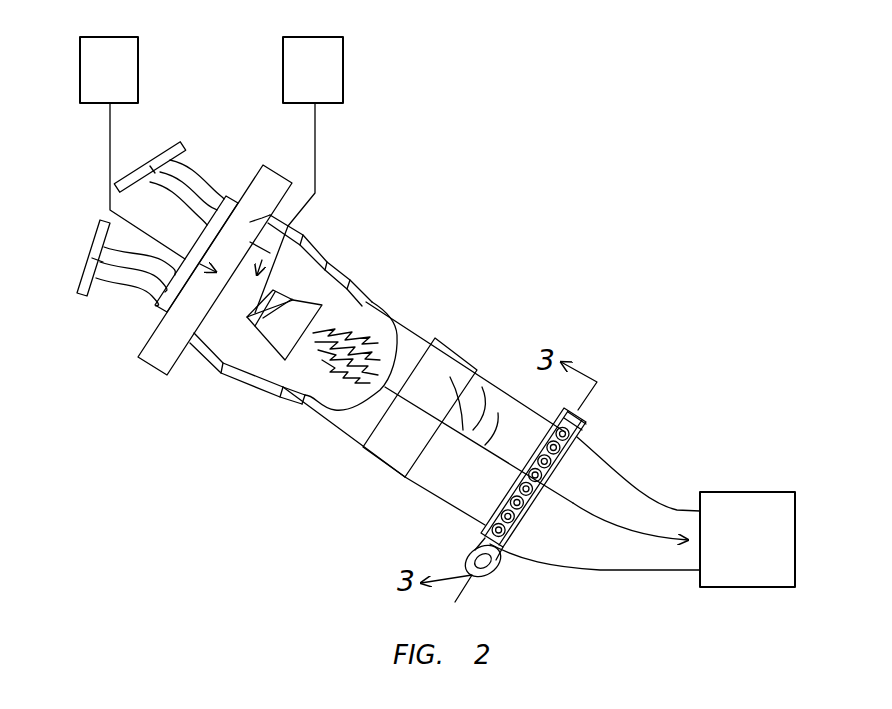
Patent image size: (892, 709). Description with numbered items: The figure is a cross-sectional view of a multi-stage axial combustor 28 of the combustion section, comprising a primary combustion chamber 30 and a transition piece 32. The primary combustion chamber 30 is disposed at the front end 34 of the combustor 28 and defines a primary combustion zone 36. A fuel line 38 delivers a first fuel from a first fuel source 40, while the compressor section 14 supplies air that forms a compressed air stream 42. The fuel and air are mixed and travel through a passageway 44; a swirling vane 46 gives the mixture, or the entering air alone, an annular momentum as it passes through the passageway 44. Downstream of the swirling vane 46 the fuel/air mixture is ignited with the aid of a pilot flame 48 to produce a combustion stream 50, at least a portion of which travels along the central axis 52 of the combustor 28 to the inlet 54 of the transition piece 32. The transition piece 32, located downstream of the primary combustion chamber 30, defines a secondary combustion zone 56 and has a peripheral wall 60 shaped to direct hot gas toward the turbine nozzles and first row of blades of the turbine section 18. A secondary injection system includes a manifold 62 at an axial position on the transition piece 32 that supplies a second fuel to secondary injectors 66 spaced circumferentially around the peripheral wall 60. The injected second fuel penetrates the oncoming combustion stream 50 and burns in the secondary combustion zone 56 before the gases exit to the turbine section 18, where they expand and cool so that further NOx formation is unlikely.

The compressor section 14 is at (139, 68).
The turbine section 18 is at (745, 492).
The combustor 28 is at (307, 231).
The primary combustion chamber 30 is at (343, 430).
The transition piece 32 is at (428, 486).
The front end 34 is at (198, 360).
The primary combustion zone 36 is at (380, 301).
The fuel line 38 is at (316, 148).
The first fuel source 40 is at (344, 68).
The compressed air stream 42 is at (111, 133).
The passageway 44 is at (238, 322).
The swirling vane 46 is at (268, 313).
The pilot flame 48 is at (373, 348).
The combustion stream 50 is at (498, 413).
The central axis 52 is at (482, 387).
The inlet 54 is at (450, 377).
The secondary combustion zone 56 is at (593, 458).
The peripheral wall 60 is at (417, 481).
The manifold 62 is at (497, 500).
The secondary injectors 66 is at (513, 527).